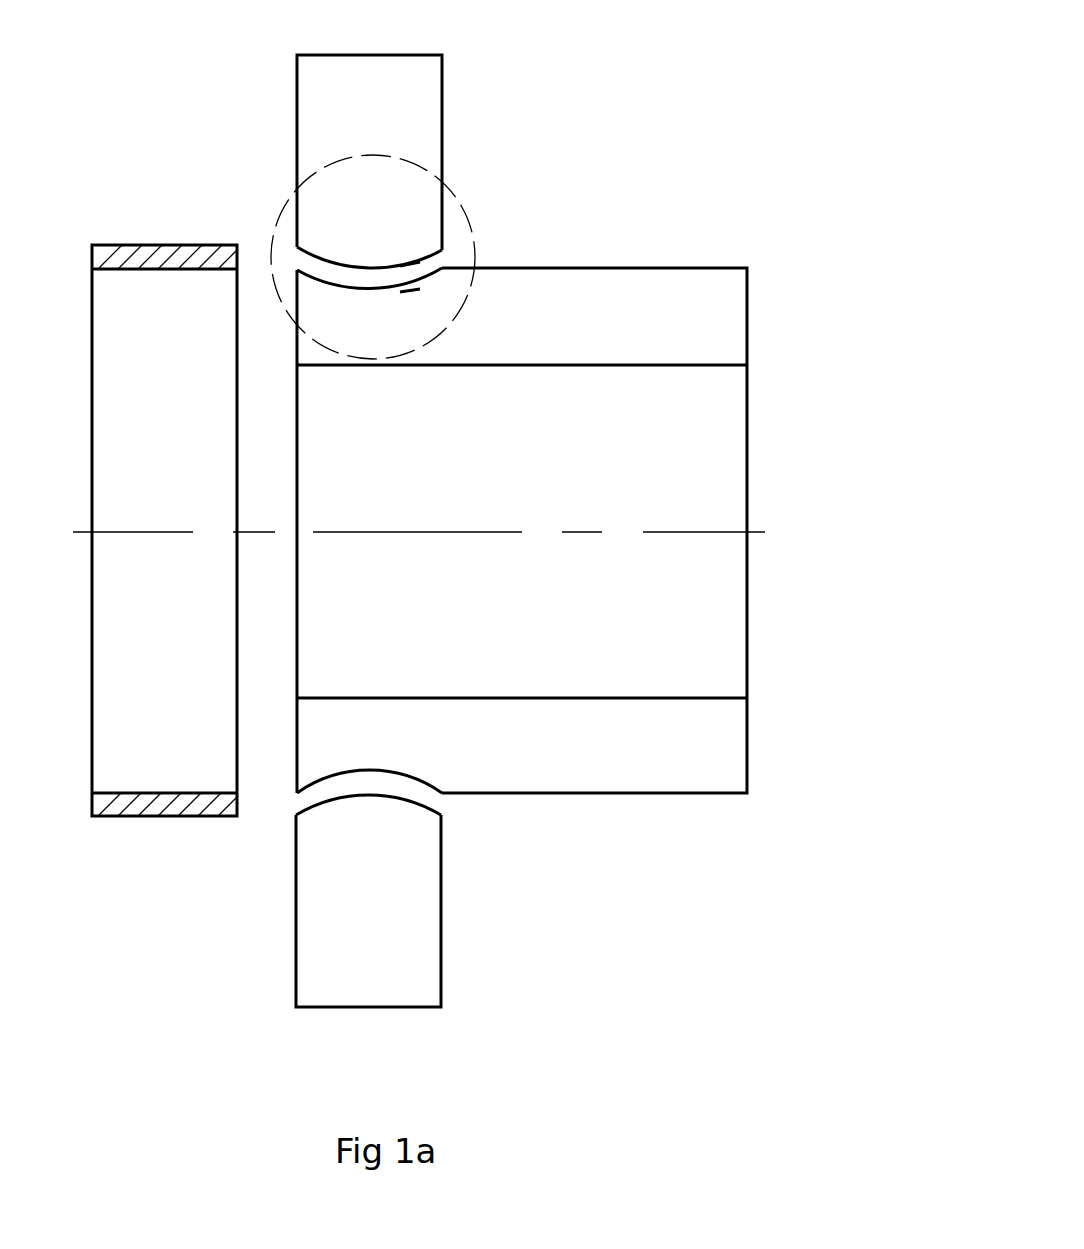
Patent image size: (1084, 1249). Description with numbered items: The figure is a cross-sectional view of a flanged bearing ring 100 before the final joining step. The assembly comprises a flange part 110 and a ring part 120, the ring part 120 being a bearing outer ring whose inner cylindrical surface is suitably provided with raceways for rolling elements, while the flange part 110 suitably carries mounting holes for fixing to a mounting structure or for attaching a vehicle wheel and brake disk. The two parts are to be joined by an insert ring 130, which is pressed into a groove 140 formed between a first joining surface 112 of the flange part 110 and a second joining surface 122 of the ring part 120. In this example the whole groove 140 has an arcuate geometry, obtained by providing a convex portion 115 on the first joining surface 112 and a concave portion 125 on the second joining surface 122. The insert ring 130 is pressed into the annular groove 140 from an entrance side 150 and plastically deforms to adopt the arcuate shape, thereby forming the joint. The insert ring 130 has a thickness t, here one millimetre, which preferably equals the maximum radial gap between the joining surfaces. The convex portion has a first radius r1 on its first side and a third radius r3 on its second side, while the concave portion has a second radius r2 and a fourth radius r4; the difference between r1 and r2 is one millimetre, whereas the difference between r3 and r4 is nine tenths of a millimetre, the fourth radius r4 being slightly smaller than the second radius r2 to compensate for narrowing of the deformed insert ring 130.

The flanged bearing ring 100 is at (640, 76).
The flange part 110 is at (317, 102).
The first joining surface 112 is at (418, 248).
The convex portion 115 is at (398, 250).
The ring part 120 is at (722, 327).
The second joining surface 122 is at (418, 300).
The concave portion 125 is at (398, 340).
The insert ring 130 is at (160, 815).
The groove 140 is at (425, 268).
The entrance side 150 is at (289, 185).
The thickness t is at (50, 197).
The first radius r1 is at (367, 888).
The second radius r2 is at (367, 888).
The third radius r3 is at (367, 888).
The fourth radius r4 is at (367, 888).